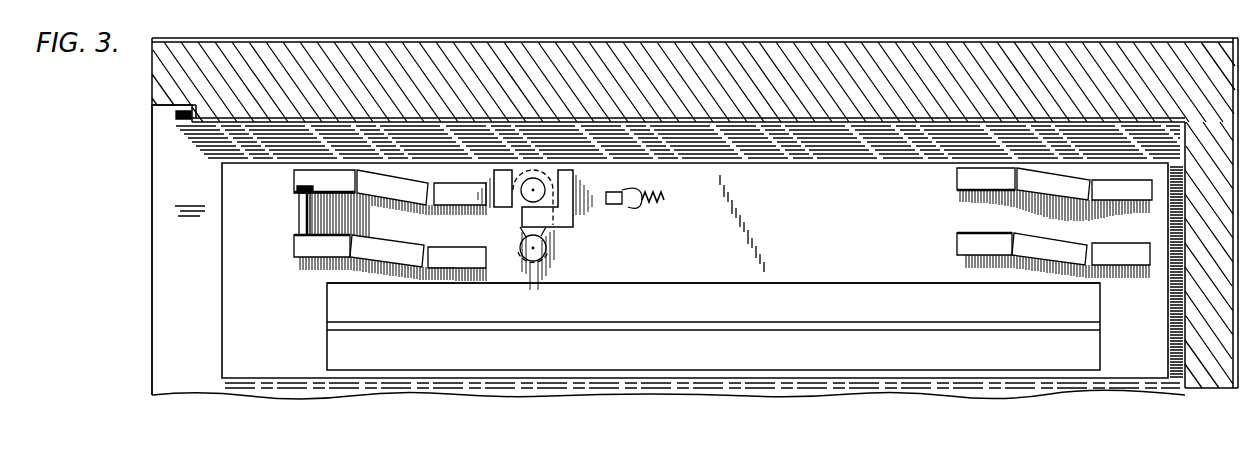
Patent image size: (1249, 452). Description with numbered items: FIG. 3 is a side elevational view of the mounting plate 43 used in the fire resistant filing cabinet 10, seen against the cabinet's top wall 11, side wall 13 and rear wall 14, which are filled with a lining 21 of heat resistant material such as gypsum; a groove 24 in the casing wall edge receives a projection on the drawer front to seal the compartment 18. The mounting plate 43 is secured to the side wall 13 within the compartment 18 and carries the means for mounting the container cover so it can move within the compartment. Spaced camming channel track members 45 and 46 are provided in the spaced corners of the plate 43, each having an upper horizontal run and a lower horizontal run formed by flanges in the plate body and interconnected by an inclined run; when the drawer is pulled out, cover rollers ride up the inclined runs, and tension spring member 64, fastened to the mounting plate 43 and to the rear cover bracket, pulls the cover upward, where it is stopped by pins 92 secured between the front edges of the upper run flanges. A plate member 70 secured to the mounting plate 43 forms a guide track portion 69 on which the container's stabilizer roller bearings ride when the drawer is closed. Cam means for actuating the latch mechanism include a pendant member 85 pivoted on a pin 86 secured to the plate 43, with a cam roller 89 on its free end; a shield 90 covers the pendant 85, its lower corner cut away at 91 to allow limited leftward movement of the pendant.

The filing cabinet 10 is at (148, 284).
The top wall 11 is at (378, 42).
The side wall 13 is at (890, 163).
The rear wall 14 is at (1215, 380).
The storage compartment 18 is at (180, 325).
The lining 21 is at (575, 50).
The groove 24 is at (176, 114).
The mounting plate 43 is at (222, 361).
The camming channel track member 45 is at (370, 227).
The camming channel track member 46 is at (1053, 177).
The tension spring member 64 is at (655, 213).
The guide track portion 69 is at (713, 309).
The plate member 70 is at (857, 287).
The pendant member 85 is at (556, 232).
The pin 86 is at (533, 178).
The cam roller 89 is at (533, 262).
The shield 90 is at (552, 173).
The cut away corner 91 is at (511, 208).
The pin 92 is at (304, 210).